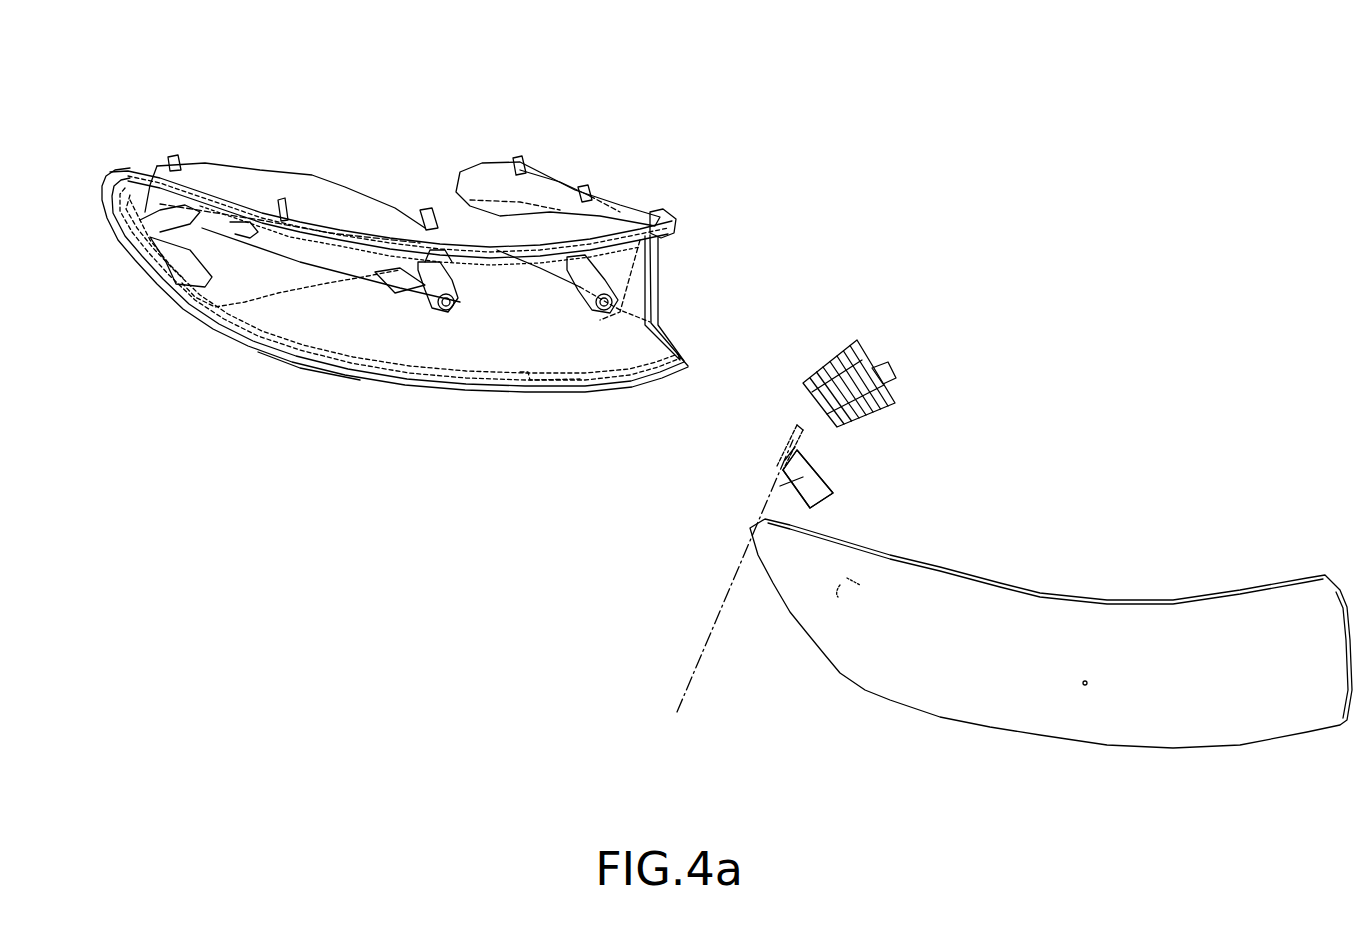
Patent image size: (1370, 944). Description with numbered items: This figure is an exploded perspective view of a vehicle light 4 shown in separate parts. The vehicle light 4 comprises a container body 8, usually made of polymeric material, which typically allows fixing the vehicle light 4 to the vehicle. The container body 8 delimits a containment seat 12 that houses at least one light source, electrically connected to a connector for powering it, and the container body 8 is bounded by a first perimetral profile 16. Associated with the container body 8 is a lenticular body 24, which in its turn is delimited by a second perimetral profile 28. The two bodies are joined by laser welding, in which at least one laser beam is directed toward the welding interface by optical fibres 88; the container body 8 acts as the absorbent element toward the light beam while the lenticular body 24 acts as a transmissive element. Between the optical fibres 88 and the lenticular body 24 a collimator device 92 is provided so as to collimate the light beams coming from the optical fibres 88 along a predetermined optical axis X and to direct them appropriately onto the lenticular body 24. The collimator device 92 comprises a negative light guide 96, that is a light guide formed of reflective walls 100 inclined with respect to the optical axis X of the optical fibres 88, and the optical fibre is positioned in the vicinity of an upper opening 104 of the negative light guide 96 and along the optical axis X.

The vehicle light 4 is at (599, 128).
The container body 8 is at (182, 309).
The containment seat 12 is at (423, 330).
The first perimetral profile 16 is at (258, 352).
The lenticular body 24 is at (1062, 635).
The second perimetral profile 28 is at (930, 564).
The optical fibres 88 is at (887, 383).
The collimator device 92 is at (833, 483).
The negative light guide 96 is at (808, 479).
The reflective walls 100 is at (783, 454).
The upper opening 104 is at (800, 432).
The optical axis X is at (690, 700).